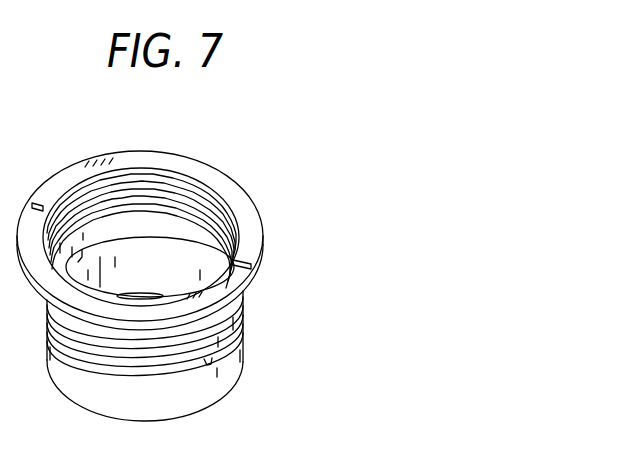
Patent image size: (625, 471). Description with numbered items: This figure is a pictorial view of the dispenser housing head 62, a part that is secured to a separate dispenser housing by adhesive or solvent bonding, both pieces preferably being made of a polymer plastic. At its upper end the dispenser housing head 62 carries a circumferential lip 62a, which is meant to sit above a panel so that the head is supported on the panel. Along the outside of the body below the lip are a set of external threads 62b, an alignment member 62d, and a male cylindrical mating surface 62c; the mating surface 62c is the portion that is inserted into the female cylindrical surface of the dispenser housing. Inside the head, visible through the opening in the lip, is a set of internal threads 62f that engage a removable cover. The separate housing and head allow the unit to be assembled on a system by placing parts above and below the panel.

The dispenser housing head 62 is at (226, 149).
The circumferential lip 62a is at (248, 197).
The external threads 62b is at (228, 306).
The male cylindrical mating surface 62c is at (200, 388).
The alignment member 62d is at (223, 350).
The internal threads 62f is at (124, 190).